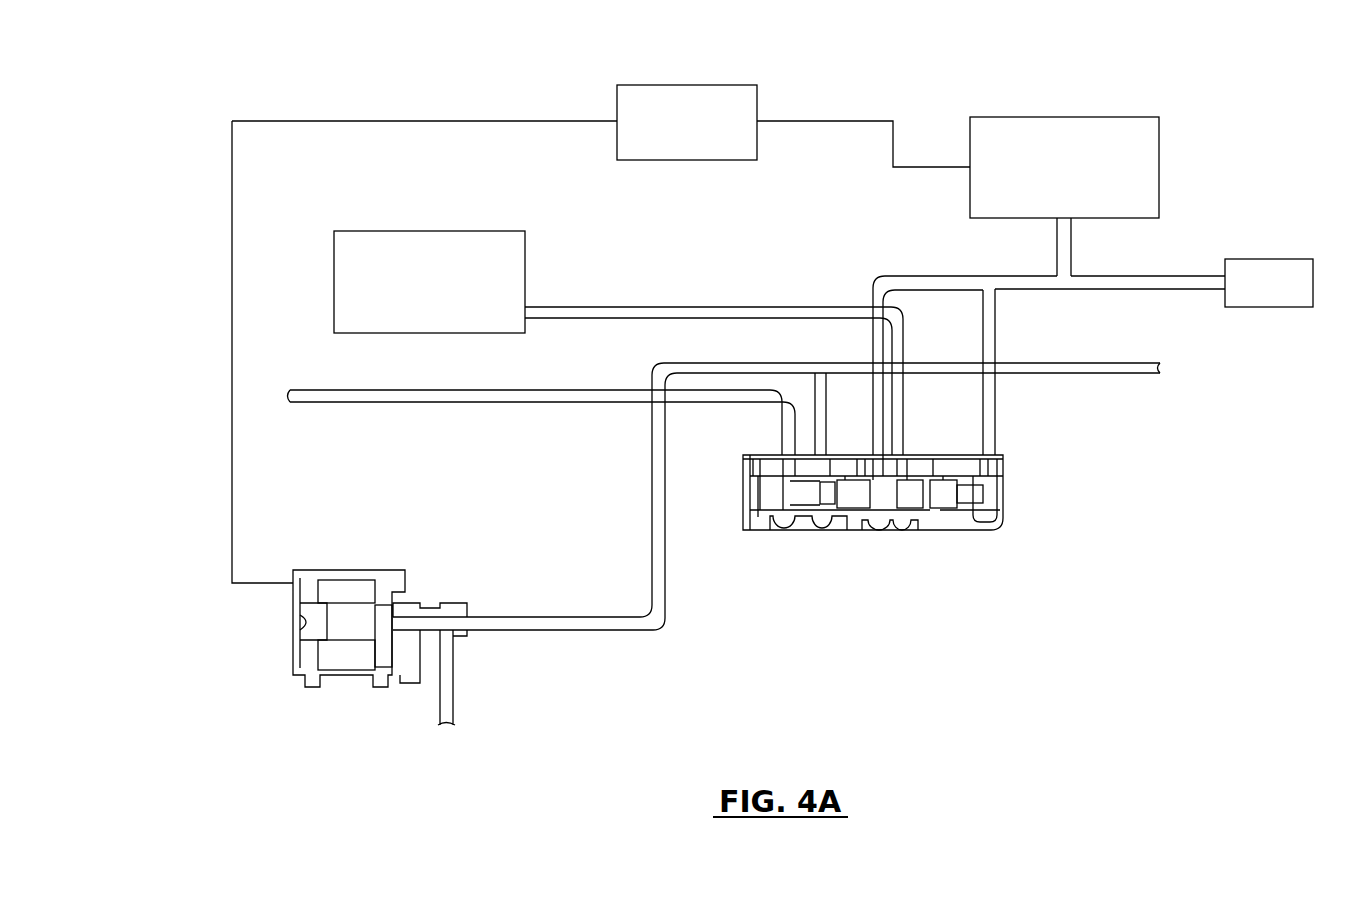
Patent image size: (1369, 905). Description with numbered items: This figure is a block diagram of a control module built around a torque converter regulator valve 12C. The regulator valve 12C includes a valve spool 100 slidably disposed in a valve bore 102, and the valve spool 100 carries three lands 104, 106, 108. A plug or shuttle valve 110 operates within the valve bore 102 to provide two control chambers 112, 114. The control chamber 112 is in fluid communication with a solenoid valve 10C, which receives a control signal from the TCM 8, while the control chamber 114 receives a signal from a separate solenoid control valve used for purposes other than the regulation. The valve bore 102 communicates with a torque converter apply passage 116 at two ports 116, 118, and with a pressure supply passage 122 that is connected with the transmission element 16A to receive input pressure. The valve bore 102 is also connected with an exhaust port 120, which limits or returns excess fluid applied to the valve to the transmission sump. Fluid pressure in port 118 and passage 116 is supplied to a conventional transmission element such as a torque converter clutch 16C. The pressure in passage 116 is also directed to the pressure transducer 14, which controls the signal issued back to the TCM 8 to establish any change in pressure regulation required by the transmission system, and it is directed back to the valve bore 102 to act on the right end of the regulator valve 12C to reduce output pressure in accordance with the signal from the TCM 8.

The TCM 8 is at (686, 85).
The pressure transducer 14 is at (1166, 164).
The transmission element 16A is at (530, 252).
The torque converter clutch 16C is at (1276, 256).
The torque converter apply passage 116 is at (923, 268).
The pressure supply passage 122 is at (670, 305).
The control chamber 114 is at (790, 465).
The exhaust port 120 is at (862, 465).
The port 118 is at (885, 465).
The valve spool 100 is at (970, 514).
The control chamber 112 is at (828, 492).
The shuttle valve 110 is at (800, 505).
The land 104 is at (846, 512).
The valve bore 102 is at (878, 508).
The land 106 is at (909, 512).
The land 108 is at (942, 513).
The torque converter regulator valve 12C is at (964, 542).
The solenoid valve 10C is at (425, 598).